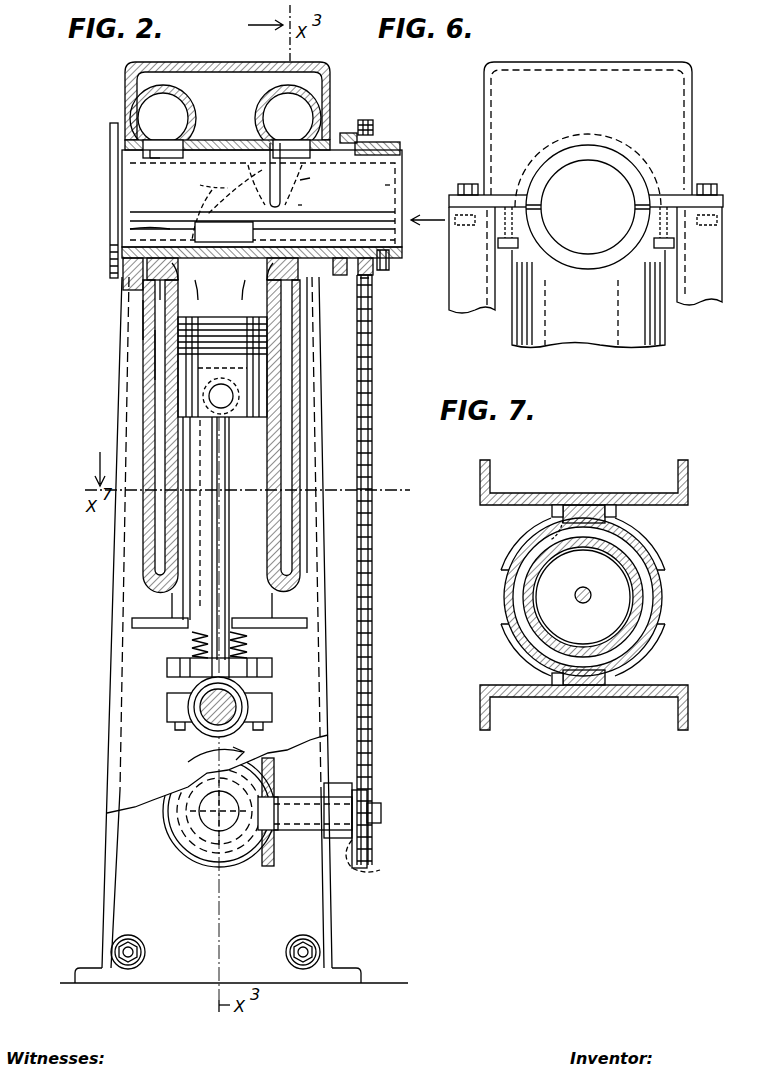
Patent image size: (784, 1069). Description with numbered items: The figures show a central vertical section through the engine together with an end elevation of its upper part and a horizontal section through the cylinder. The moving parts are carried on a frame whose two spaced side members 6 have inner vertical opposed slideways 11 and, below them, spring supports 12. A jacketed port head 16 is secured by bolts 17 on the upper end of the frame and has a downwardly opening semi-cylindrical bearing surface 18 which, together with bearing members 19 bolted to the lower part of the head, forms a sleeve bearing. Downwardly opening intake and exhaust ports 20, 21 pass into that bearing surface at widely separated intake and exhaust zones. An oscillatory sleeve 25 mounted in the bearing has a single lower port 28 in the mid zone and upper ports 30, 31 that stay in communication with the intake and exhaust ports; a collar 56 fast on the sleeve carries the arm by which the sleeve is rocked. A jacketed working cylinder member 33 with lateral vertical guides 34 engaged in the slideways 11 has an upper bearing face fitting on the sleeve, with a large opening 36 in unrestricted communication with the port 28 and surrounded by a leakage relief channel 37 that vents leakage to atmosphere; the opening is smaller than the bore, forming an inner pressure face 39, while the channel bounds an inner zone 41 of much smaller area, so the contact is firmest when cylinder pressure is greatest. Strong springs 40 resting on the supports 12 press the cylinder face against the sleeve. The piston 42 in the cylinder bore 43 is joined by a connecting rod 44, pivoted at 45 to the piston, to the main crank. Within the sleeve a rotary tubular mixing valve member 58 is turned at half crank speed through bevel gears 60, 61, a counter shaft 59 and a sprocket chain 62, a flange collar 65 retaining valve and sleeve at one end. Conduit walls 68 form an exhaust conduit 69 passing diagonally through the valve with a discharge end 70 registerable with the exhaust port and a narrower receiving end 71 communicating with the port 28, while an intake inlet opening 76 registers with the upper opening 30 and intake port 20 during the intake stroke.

In FIG. 6, the side members 6 is at (462, 300).
In FIG. 7, the side members 6 is at (676, 506).
In FIG. 7, the slideways 11 is at (603, 500).
In FIG. 2, the spring supports 12 is at (258, 682).
In FIG. 2, the jacketed port head 16 is at (215, 62).
In FIG. 6, the jacketed port head 16 is at (588, 128).
In FIG. 6, the bolts 17 is at (716, 192).
In FIG. 2, the semi-cylindrical bearing surface 18 is at (222, 140).
In FIG. 2, the bearing members 19 is at (142, 292).
In FIG. 6, the bearing members 19 is at (575, 272).
In FIG. 2, the intake port 20 is at (163, 118).
In FIG. 2, the exhaust port 21 is at (300, 120).
In FIG. 2, the oscillatory sleeve 25 is at (355, 152).
In FIG. 6, the oscillatory sleeve 25 is at (628, 170).
In FIG. 2, the oscillatory lower port 28 is at (241, 280).
In FIG. 2, the upper port 30 is at (150, 152).
In FIG. 2, the upper port 31 is at (352, 138).
In FIG. 2, the jacketed working cylinder member 33 is at (145, 540).
In FIG. 7, the jacketed working cylinder member 33 is at (664, 600).
In FIG. 7, the lateral vertical guides 34 is at (585, 496).
In FIG. 2, the large opening 36 is at (202, 280).
In FIG. 2, the leakage relief channel 37 is at (150, 292).
In FIG. 2, the inner pressure face 39 is at (155, 360).
In FIG. 2, the springs 40 is at (250, 642).
In FIG. 2, the inner zone 41 is at (162, 286).
In FIG. 2, the piston 42 is at (200, 430).
In FIG. 2, the cylinder bore 43 is at (219, 518).
In FIG. 2, the connecting rod 44 is at (268, 598).
In FIG. 7, the connecting rod 44 is at (586, 603).
In FIG. 2, the pivot 45 is at (232, 410).
In FIG. 2, the collar 56 is at (373, 300).
In FIG. 2, the rotary tubular mixing valve member 58 is at (385, 185).
In FIG. 6, the rotary tubular mixing valve member 58 is at (588, 207).
In FIG. 2, the counter shaft 59 is at (374, 835).
In FIG. 2, the bevel gear 60 is at (226, 866).
In FIG. 2, the bevel gear 61 is at (215, 230).
In FIG. 2, the sprocket chain 62 is at (374, 588).
In FIG. 2, the flange collar 65 is at (110, 218).
In FIG. 2, the conduit walls 68 is at (248, 192).
In FIG. 2, the exhaust conduit 69 is at (313, 178).
In FIG. 2, the discharge end 70 is at (288, 118).
In FIG. 2, the receiving end 71 is at (160, 230).
In FIG. 2, the intake inlet opening 76 is at (160, 158).